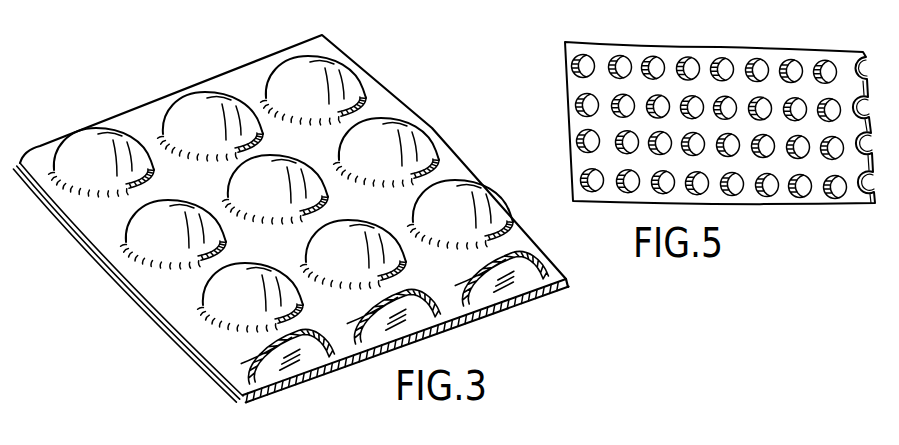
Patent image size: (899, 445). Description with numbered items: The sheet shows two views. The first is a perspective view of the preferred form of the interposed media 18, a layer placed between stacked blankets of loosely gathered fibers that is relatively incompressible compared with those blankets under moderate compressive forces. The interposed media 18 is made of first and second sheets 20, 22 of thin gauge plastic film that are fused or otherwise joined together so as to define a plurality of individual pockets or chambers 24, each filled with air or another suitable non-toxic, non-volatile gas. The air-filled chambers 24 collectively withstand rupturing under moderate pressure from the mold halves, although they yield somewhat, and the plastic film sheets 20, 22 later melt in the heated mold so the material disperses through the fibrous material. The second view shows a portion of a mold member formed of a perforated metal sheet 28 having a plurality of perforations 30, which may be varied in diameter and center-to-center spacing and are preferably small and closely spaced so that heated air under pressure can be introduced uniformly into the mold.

In FIG. 3, the interposed media 18 is at (396, 30).
In FIG. 3, the first sheet 20 is at (529, 297).
In FIG. 3, the second sheet 22 is at (532, 262).
In FIG. 3, the pockets or chambers 24 is at (380, 116).
In FIG. 5, the perforated metal sheet 28 is at (777, 53).
In FIG. 5, the perforations 30 is at (609, 60).